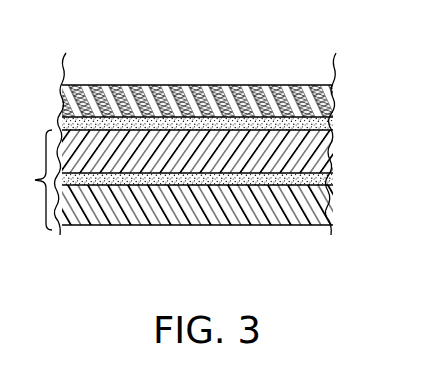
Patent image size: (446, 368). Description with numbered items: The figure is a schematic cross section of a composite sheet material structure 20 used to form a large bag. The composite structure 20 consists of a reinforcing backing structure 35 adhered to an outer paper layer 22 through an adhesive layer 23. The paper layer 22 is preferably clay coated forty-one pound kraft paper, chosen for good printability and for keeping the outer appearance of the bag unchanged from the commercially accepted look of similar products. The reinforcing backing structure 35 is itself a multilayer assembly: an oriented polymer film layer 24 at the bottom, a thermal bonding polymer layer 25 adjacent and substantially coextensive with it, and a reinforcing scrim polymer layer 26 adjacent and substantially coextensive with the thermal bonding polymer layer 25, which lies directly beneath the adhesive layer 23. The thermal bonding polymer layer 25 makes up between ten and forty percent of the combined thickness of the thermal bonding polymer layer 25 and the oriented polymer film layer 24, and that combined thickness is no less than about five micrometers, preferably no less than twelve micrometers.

The composite sheet material structure 20 is at (226, 126).
The paper layer 22 is at (326, 103).
The adhesive layer 23 is at (333, 125).
The reinforcing scrim polymer layer 26 is at (328, 160).
The thermal bonding polymer layer 25 is at (331, 181).
The oriented polymer film layer 24 is at (322, 208).
The reinforcing backing structure 35 is at (30, 180).